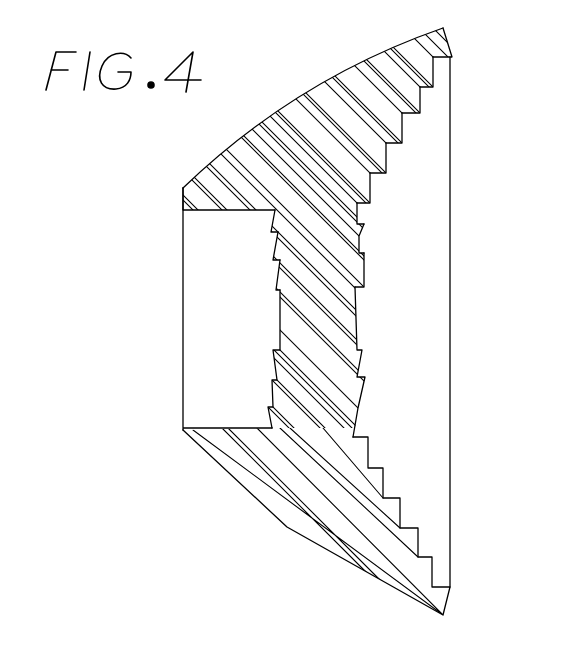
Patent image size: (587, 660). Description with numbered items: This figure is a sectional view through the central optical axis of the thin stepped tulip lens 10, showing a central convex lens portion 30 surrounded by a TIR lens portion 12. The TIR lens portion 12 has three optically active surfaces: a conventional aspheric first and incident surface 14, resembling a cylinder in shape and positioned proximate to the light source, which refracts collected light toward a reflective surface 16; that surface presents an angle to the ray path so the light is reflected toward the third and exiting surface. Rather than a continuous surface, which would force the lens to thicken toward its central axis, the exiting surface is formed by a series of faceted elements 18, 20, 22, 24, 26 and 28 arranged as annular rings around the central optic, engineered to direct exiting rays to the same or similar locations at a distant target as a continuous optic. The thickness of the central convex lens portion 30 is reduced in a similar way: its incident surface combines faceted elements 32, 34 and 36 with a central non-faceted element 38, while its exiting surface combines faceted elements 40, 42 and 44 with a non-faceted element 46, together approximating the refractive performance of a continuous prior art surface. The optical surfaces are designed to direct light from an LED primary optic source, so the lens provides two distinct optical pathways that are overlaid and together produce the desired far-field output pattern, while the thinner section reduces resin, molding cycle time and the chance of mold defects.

The stepped tulip lens 10 is at (462, 459).
The TIR lens portion 12 is at (170, 432).
The first and incident surface 14 is at (196, 214).
The reflective surface 16 is at (299, 104).
The faceted element 18 is at (450, 37).
The faceted element 20 is at (436, 72).
The faceted element 22 is at (423, 103).
The faceted element 24 is at (400, 133).
The faceted element 26 is at (390, 157).
The faceted element 28 is at (370, 188).
The central convex lens portion 30 is at (173, 430).
The faceted element 32 is at (273, 222).
The faceted element 34 is at (275, 245).
The faceted element 36 is at (277, 280).
The non-faceted element 38 is at (280, 315).
The faceted element 40 is at (360, 222).
The faceted element 42 is at (360, 247).
The faceted element 44 is at (362, 275).
The non-faceted element 46 is at (358, 322).